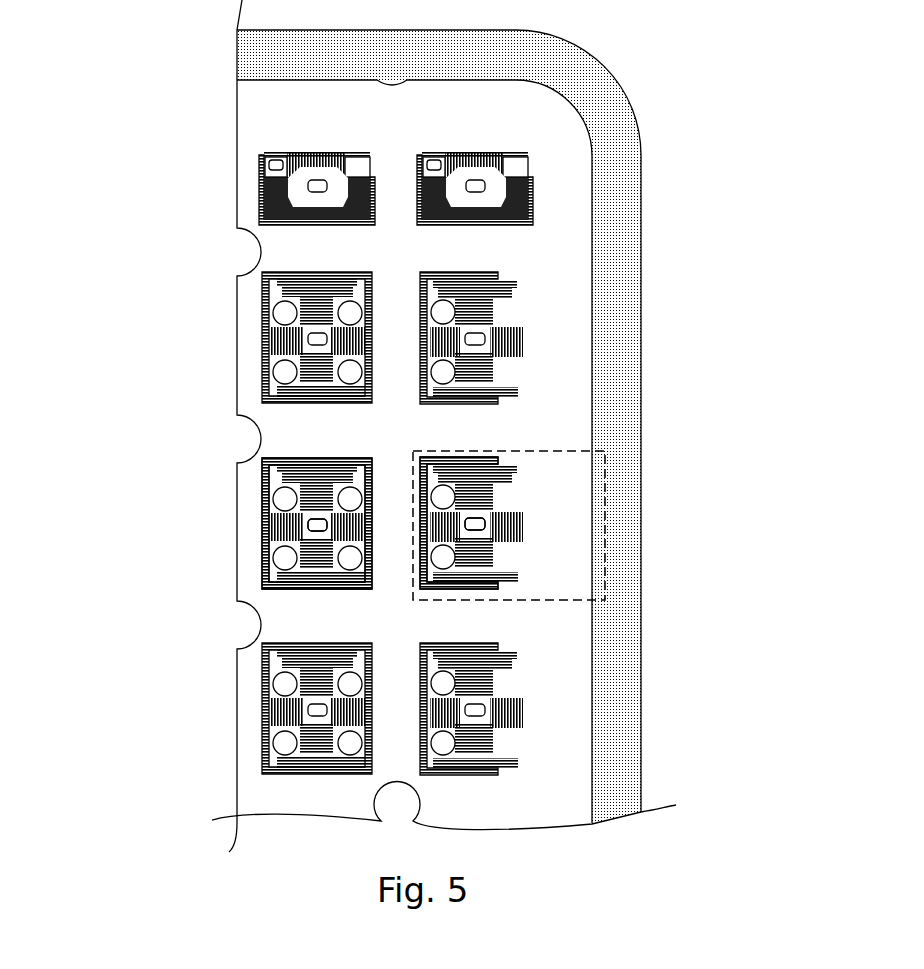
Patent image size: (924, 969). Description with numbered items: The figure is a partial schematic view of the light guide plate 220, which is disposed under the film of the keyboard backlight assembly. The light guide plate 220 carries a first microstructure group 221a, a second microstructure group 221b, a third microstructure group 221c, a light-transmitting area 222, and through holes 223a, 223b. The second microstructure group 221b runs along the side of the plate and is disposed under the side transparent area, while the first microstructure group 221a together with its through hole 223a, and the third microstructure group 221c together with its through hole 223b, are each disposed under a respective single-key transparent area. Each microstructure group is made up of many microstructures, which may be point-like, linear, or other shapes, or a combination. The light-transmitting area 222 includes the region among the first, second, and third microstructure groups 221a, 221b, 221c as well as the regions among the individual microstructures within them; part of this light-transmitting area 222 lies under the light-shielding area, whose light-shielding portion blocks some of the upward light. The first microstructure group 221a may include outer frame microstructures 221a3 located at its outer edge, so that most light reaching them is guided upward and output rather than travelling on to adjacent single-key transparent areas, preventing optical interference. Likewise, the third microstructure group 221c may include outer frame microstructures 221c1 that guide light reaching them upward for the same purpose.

The light guide plate 220 is at (893, 59).
The first microstructure group 221a is at (607, 528).
The outer frame microstructures 221a3 is at (490, 592).
The second microstructure group 221b is at (615, 278).
The third microstructure group 221c is at (243, 505).
The outer frame microstructures 221c1 is at (263, 510).
The light-transmitting area 222 is at (567, 187).
The through hole 223a is at (478, 532).
The through hole 223b is at (318, 529).